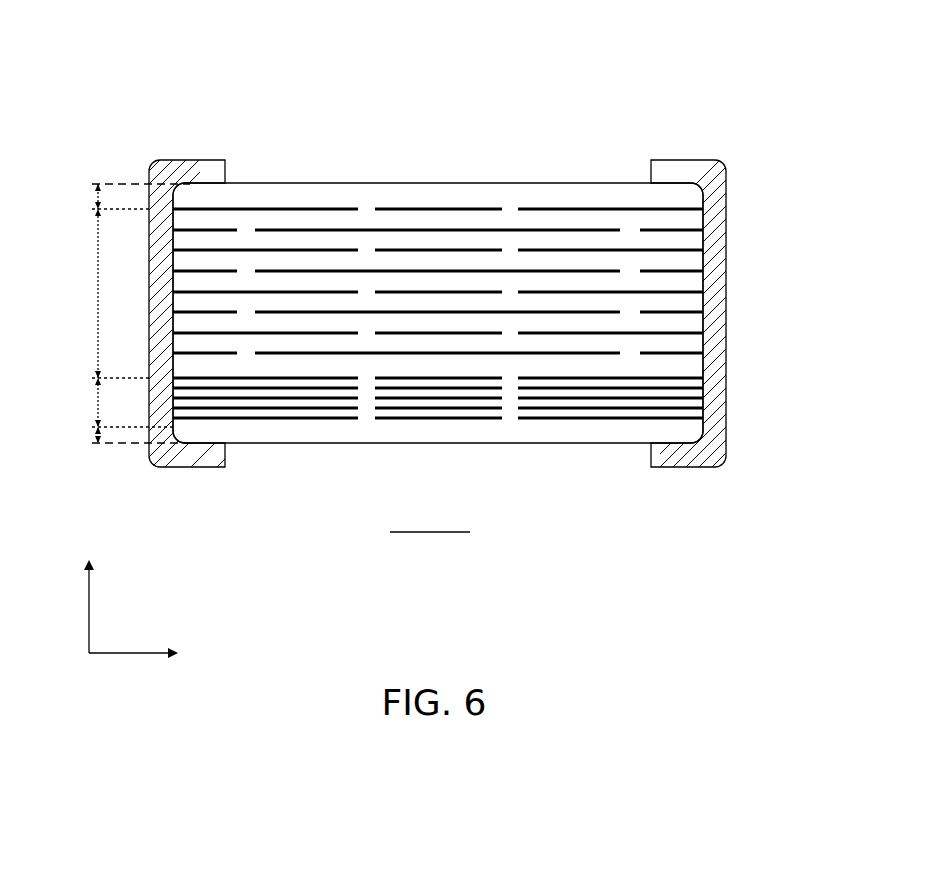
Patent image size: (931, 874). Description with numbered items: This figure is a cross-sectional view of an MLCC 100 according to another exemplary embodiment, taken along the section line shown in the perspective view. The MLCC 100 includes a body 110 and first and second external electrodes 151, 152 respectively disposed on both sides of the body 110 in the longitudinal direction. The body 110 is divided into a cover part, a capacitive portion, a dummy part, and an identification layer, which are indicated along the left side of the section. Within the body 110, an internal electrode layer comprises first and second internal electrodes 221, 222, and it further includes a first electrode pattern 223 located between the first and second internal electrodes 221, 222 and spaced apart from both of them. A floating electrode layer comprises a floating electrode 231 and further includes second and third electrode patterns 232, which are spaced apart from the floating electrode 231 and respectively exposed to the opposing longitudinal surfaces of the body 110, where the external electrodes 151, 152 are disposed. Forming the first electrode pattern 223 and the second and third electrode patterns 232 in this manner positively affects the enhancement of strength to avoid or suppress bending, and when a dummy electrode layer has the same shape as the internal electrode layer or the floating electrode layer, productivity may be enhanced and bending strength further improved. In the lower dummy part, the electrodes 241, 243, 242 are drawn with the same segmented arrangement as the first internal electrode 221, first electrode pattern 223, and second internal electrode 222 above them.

The MLCC 100 is at (275, 46).
The body 110 is at (498, 184).
The first external electrode 151 is at (192, 467).
The second external electrode 152 is at (688, 467).
The first internal electrode 221 is at (337, 208).
The second internal electrode 222 is at (563, 208).
The first electrode pattern 223 is at (433, 208).
The floating electrode 231 is at (613, 229).
The second and third electrode patterns 232 is at (680, 235).
The lower first internal electrode 241 is at (322, 419).
The lower second internal electrode 242 is at (557, 419).
The lower third internal electrode 243 is at (432, 419).